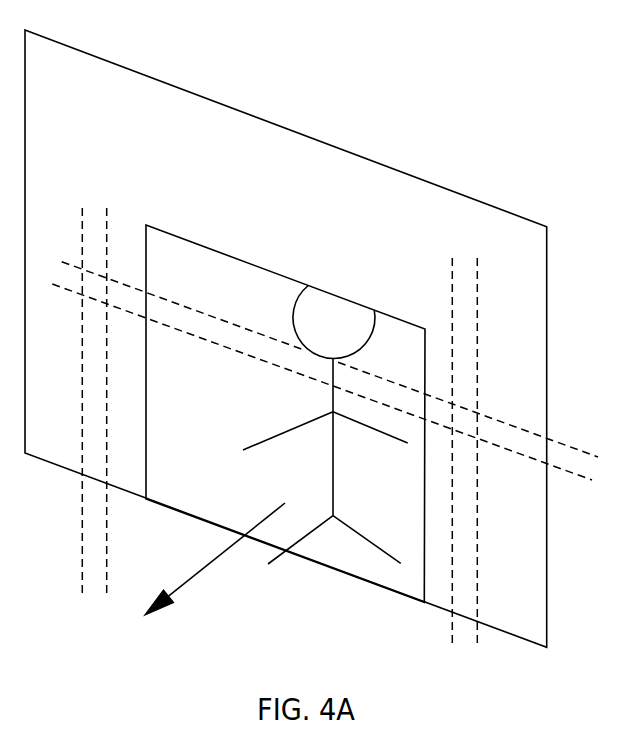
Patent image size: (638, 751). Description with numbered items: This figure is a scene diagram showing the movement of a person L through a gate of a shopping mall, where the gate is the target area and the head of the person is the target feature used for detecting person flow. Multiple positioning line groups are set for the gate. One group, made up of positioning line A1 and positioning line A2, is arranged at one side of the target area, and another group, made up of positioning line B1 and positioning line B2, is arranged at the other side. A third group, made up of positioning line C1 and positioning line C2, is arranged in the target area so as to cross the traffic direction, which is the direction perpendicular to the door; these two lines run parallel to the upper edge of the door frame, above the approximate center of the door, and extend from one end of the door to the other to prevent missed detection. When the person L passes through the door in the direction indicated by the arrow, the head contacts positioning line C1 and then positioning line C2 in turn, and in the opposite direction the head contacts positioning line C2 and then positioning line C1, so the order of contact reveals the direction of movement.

The positioning line A1 is at (62, 403).
The positioning line A2 is at (134, 403).
The positioning line B1 is at (500, 452).
The positioning line B2 is at (428, 452).
The positioning line C1 is at (330, 359).
The positioning line C2 is at (322, 382).
The person L is at (325, 425).